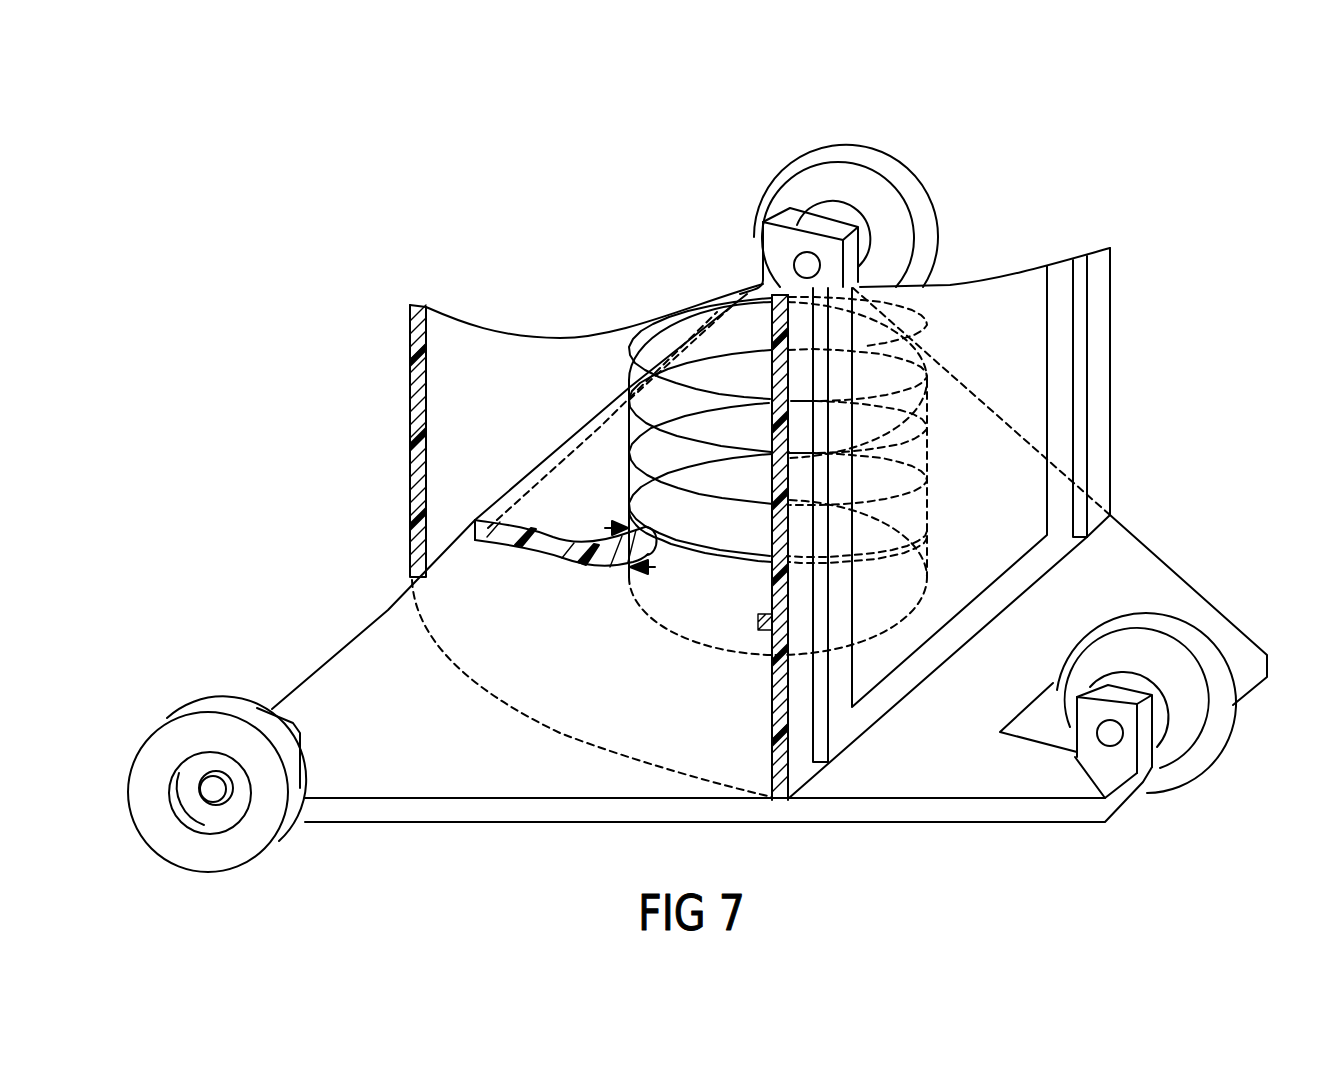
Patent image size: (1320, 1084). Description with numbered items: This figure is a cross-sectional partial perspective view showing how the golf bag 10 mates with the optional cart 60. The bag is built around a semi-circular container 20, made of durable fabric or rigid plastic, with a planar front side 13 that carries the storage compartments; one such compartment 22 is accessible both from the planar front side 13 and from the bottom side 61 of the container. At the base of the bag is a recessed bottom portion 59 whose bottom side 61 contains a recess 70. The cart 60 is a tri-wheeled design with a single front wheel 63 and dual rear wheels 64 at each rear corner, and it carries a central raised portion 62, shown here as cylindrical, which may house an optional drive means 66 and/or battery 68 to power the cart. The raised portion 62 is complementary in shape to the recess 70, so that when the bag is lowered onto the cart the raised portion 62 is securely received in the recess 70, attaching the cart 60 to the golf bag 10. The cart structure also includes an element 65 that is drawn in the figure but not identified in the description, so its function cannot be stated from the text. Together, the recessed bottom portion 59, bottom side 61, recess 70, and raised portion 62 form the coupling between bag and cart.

The golf bag 10 is at (392, 364).
The planar front side 13 is at (1037, 497).
The semi-circular container 20 is at (413, 432).
The storage compartment 22 is at (704, 744).
The recessed bottom portion 59 is at (573, 550).
The cart 60 is at (747, 668).
The bottom side 61 is at (502, 538).
The central raised portion 62 is at (622, 557).
The front wheel 63 is at (1180, 643).
The rear wheels 64 is at (202, 700).
The frame 65 is at (387, 647).
The drive means 66 is at (647, 480).
The battery 68 is at (647, 413).
The recess 70 is at (655, 567).